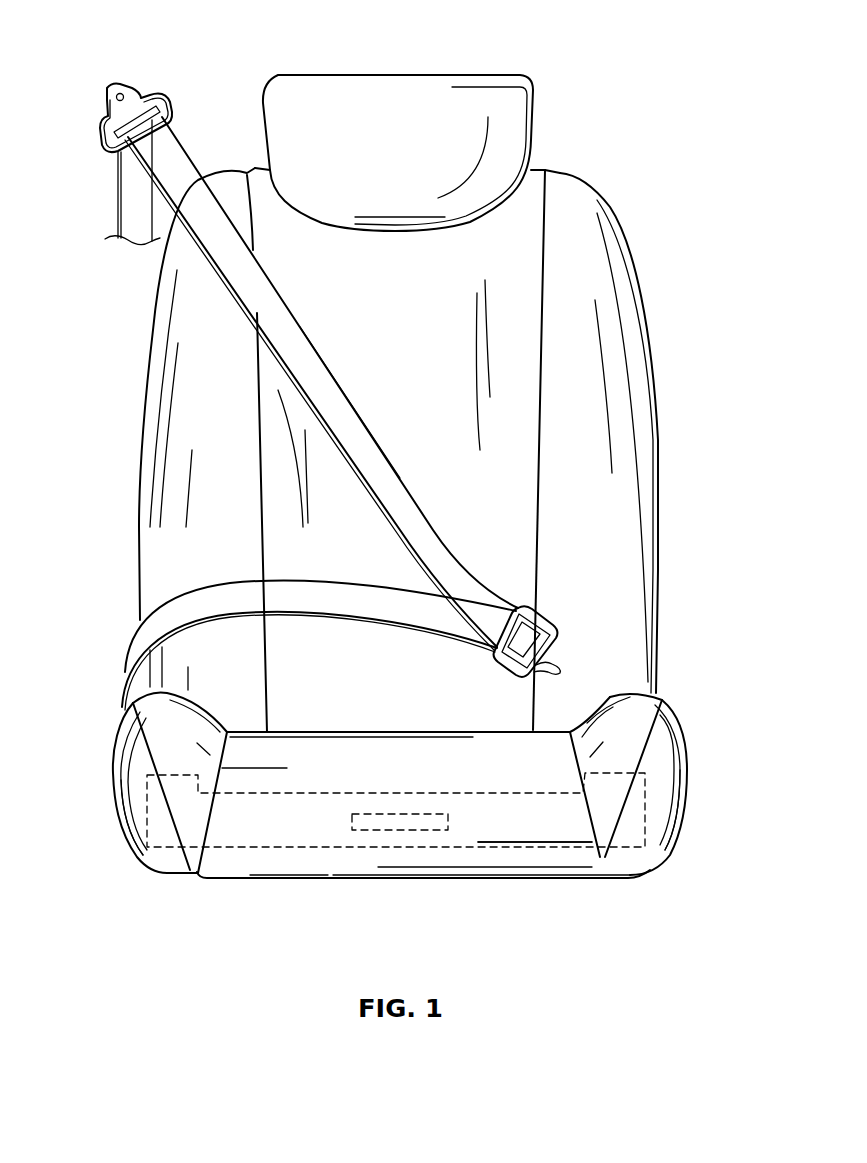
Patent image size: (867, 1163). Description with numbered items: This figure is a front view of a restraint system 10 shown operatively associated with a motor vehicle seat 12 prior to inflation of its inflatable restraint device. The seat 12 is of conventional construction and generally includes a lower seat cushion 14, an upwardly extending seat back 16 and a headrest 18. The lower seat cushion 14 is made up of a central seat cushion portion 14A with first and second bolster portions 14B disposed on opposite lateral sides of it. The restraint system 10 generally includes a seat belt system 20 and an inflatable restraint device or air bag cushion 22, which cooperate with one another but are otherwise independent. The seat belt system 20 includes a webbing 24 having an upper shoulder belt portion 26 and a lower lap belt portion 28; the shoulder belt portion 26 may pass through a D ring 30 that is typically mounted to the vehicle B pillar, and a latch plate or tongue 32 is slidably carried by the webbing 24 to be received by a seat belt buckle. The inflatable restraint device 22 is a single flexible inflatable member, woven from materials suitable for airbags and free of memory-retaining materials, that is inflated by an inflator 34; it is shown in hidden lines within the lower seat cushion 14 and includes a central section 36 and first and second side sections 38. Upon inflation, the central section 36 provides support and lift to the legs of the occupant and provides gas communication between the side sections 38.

The restraint system 10 is at (212, 900).
The seat 12 is at (633, 219).
The lower seat cushion 14 is at (393, 890).
The central seat cushion portion 14A is at (523, 753).
The bolster portion 14B is at (113, 747).
The seat back 16 is at (545, 163).
The headrest 18 is at (398, 77).
The seat belt system 20 is at (122, 264).
The inflatable restraint device 22 is at (571, 856).
The webbing 24 is at (366, 401).
The shoulder belt portion 26 is at (382, 444).
The lap belt portion 28 is at (297, 617).
The D ring 30 is at (155, 93).
The latch plate 32 is at (540, 615).
The inflator 34 is at (368, 832).
The central section 36 is at (498, 850).
The side section 38 is at (123, 835).